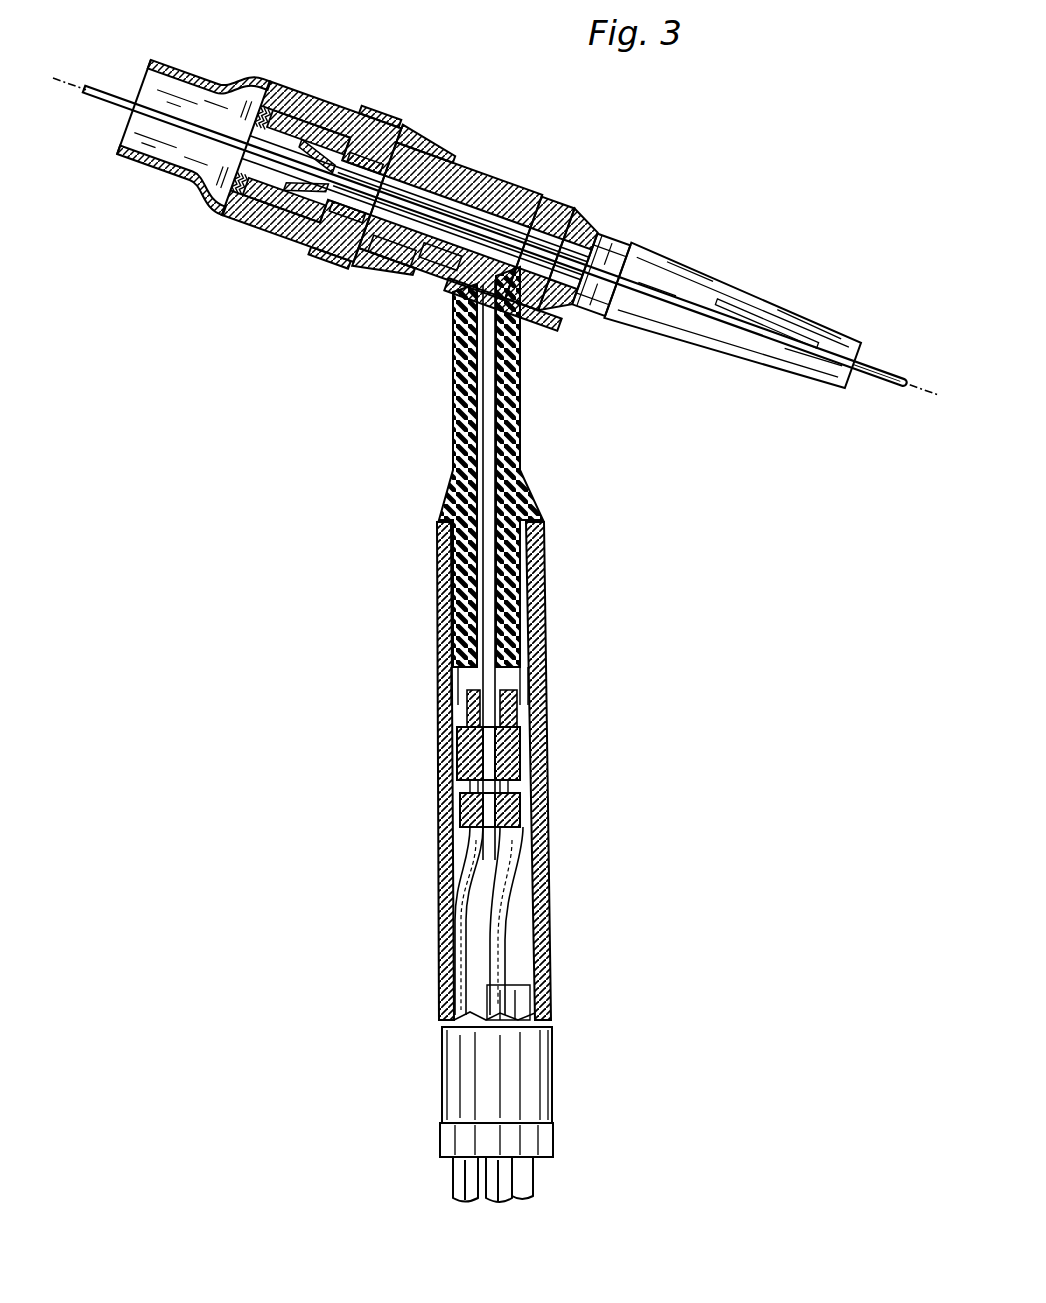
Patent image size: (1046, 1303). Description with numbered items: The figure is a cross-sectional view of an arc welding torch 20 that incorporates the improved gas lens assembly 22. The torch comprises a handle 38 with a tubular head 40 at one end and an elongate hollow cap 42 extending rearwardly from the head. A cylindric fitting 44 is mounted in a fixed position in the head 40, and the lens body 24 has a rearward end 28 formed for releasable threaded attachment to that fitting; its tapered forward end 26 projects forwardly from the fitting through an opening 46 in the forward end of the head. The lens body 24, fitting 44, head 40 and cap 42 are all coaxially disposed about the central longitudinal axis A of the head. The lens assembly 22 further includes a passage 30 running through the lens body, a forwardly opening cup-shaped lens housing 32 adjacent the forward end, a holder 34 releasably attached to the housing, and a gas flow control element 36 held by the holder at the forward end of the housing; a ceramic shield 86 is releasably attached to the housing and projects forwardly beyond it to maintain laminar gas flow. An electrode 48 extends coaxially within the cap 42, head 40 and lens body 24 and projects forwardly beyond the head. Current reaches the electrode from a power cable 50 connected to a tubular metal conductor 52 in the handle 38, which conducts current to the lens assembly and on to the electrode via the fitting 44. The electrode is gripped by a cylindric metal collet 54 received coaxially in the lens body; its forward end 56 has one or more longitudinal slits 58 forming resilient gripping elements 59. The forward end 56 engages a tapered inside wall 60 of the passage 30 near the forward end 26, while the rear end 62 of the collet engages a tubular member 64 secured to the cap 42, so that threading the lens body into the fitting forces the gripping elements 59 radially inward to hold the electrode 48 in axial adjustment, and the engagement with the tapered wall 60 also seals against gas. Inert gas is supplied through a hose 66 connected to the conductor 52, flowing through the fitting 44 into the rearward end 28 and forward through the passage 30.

The arc welding torch 20 is at (617, 157).
The gas lens assembly 22 is at (343, 102).
The lens body 24 is at (357, 245).
The tapered forward end 26 is at (232, 216).
The rearward end 28 is at (435, 258).
The passage 30 is at (393, 253).
The lens housing 32 is at (287, 243).
The holder 34 is at (292, 110).
The gas flow control element 36 is at (255, 100).
The handle 38 is at (540, 689).
The tubular head 40 is at (547, 300).
The cap 42 is at (803, 313).
The fitting 44 is at (558, 210).
The opening 46 is at (417, 153).
The electrode 48 is at (867, 377).
The power cable 50 is at (533, 1175).
The tubular metal conductor 52 is at (478, 503).
The collet 54 is at (495, 175).
The forward end of collet 56 is at (402, 130).
The longitudinal slits 58 is at (320, 247).
The gripping elements 59 is at (290, 125).
The tapered inside wall 60 is at (267, 233).
The rear end of collet 62 is at (535, 188).
The tubular member 64 is at (600, 232).
The hose 66 is at (460, 1178).
The ceramic shield 86 is at (372, 108).
The central longitudinal axis A is at (912, 390).